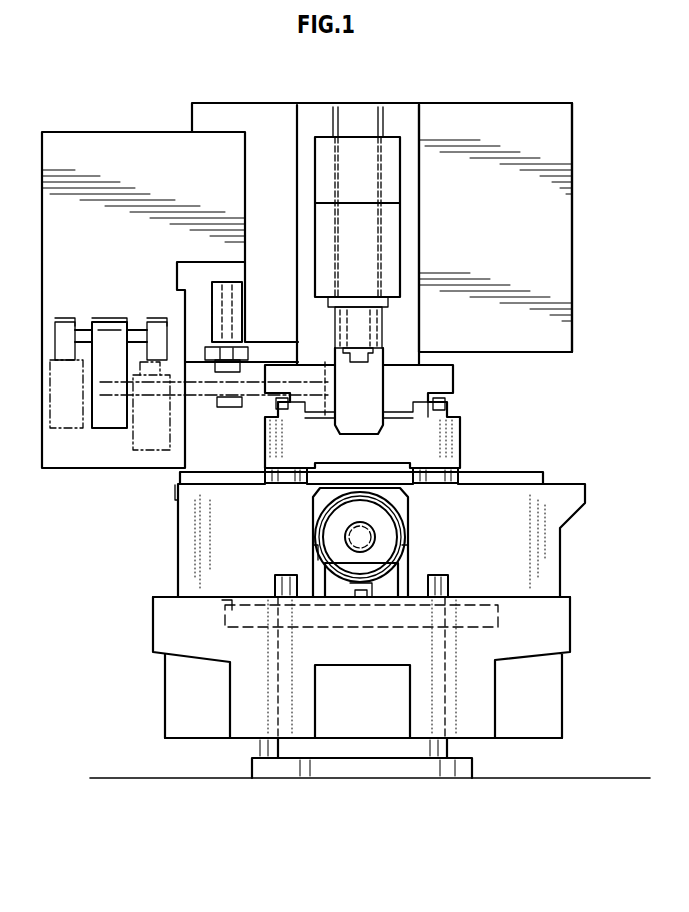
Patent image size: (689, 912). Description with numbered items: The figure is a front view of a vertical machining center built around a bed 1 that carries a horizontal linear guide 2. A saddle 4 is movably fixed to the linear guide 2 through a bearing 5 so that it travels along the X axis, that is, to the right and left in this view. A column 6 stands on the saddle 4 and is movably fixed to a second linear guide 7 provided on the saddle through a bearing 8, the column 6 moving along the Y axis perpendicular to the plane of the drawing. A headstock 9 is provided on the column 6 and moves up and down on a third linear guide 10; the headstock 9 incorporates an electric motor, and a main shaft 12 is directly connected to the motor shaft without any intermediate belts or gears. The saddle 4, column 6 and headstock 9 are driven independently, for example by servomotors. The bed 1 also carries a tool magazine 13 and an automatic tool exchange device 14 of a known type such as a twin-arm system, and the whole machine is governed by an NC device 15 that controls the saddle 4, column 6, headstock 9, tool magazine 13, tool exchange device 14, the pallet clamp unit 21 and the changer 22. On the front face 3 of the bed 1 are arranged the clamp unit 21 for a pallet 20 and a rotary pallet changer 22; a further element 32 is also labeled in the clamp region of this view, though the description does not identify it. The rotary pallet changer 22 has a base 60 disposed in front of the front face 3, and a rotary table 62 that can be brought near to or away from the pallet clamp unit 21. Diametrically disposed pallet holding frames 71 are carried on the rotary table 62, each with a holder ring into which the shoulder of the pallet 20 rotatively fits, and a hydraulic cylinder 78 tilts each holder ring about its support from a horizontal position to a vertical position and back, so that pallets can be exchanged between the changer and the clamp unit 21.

The bed 1 is at (562, 570).
The linear guide 2 is at (525, 473).
The front face 3 is at (553, 547).
The saddle 4 is at (453, 443).
The bearing 5 is at (267, 485).
The column 6 is at (410, 268).
The second linear guide 7 is at (278, 415).
The bearing 8 is at (262, 403).
The headstock 9 is at (390, 218).
The third linear guide 10 is at (335, 372).
The main shaft 12 is at (353, 364).
The tool magazine 13 is at (108, 338).
The automatic tool exchange device 14 is at (250, 352).
The NC device 15 is at (562, 268).
The pallet 20 is at (317, 505).
The clamp unit 21 is at (400, 522).
The rotary pallet changer 22 is at (584, 631).
The spindle shaft 32 is at (372, 545).
The base 60 is at (445, 678).
The rotary table 62 is at (498, 622).
The pallet holding frame 71 is at (310, 553).
The hydraulic cylinder 78 is at (275, 585).